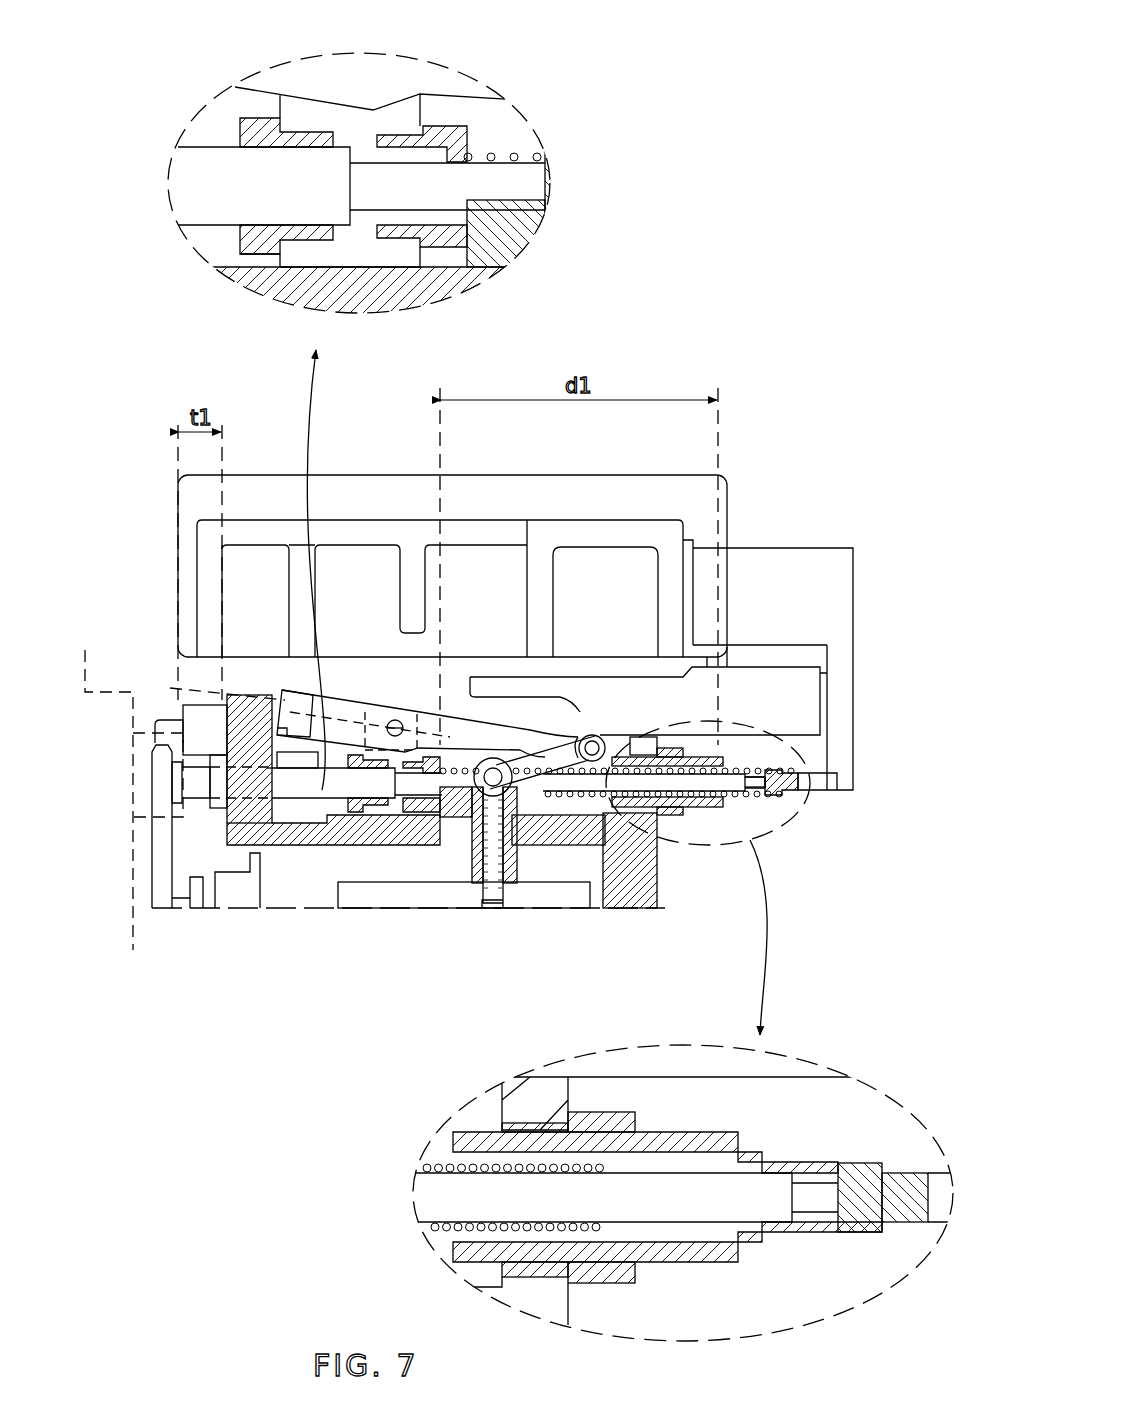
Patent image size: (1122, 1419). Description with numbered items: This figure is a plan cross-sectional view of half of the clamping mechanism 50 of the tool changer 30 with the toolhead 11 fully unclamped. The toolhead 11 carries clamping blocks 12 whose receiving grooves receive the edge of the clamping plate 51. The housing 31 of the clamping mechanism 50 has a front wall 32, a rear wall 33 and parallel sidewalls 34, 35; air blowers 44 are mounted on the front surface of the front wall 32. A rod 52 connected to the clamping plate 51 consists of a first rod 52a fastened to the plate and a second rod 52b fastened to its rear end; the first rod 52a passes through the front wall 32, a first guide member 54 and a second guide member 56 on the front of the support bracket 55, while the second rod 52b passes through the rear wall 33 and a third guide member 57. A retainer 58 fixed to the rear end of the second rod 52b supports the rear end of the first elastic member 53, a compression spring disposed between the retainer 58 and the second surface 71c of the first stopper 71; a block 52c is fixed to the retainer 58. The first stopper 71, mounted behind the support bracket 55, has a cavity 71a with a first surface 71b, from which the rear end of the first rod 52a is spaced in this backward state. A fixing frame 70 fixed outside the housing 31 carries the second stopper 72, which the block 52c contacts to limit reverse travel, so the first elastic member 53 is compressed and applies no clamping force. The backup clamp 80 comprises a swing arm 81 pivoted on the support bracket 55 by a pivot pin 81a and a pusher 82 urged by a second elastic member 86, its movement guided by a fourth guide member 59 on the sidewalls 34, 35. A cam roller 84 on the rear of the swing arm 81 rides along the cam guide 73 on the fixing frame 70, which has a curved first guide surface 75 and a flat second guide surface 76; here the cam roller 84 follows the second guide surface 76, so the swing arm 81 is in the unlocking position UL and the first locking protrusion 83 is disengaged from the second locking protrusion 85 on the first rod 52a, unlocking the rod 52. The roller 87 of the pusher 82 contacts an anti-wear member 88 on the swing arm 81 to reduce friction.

The toolhead 11 is at (85, 652).
The clamping block 12 is at (150, 733).
The developing cartridge 30 is at (104, 507).
The housing 31 is at (664, 893).
The front wall 32 is at (243, 693).
The rear wall 33 is at (650, 867).
The sidewall 34 is at (408, 906).
The sidewall 35 is at (323, 848).
The air blower 44 is at (167, 715).
The clamping mechanism 50 is at (171, 755).
The clamping plate 51 is at (150, 868).
The rod 52 is at (302, 793).
The first rod 52a is at (495, 890).
The second rod 52b is at (430, 209).
The block 52c is at (783, 800).
The first elastic member 53 is at (628, 827).
The first guide member 54 is at (213, 808).
The support bracket 55 is at (354, 70).
The second guide member 56 is at (353, 808).
The third guide member 57 is at (683, 822).
The retainer 58 is at (723, 762).
The fourth guide member 59 is at (553, 833).
The fixing frame 70 is at (634, 484).
The first stopper 71 is at (415, 812).
The cavity 71a is at (403, 220).
The first surface 71b is at (433, 135).
The second surface 71c is at (467, 133).
The second stopper 72 is at (812, 795).
The cam guide 73 is at (621, 676).
The first guide surface 75 is at (452, 706).
The second guide surface 76 is at (582, 705).
The backup clamp 80 is at (411, 678).
The swing arm 81 is at (333, 710).
The pivot pin 81a is at (396, 720).
The pusher 82 is at (489, 876).
The first locking protrusion 83 is at (258, 750).
The cam roller 84 is at (606, 740).
The second locking protrusion 85 is at (273, 755).
The second elastic member 86 is at (503, 898).
The roller 87 is at (503, 727).
The anti-wear member 88 is at (500, 757).
The unlocking position UL is at (170, 687).